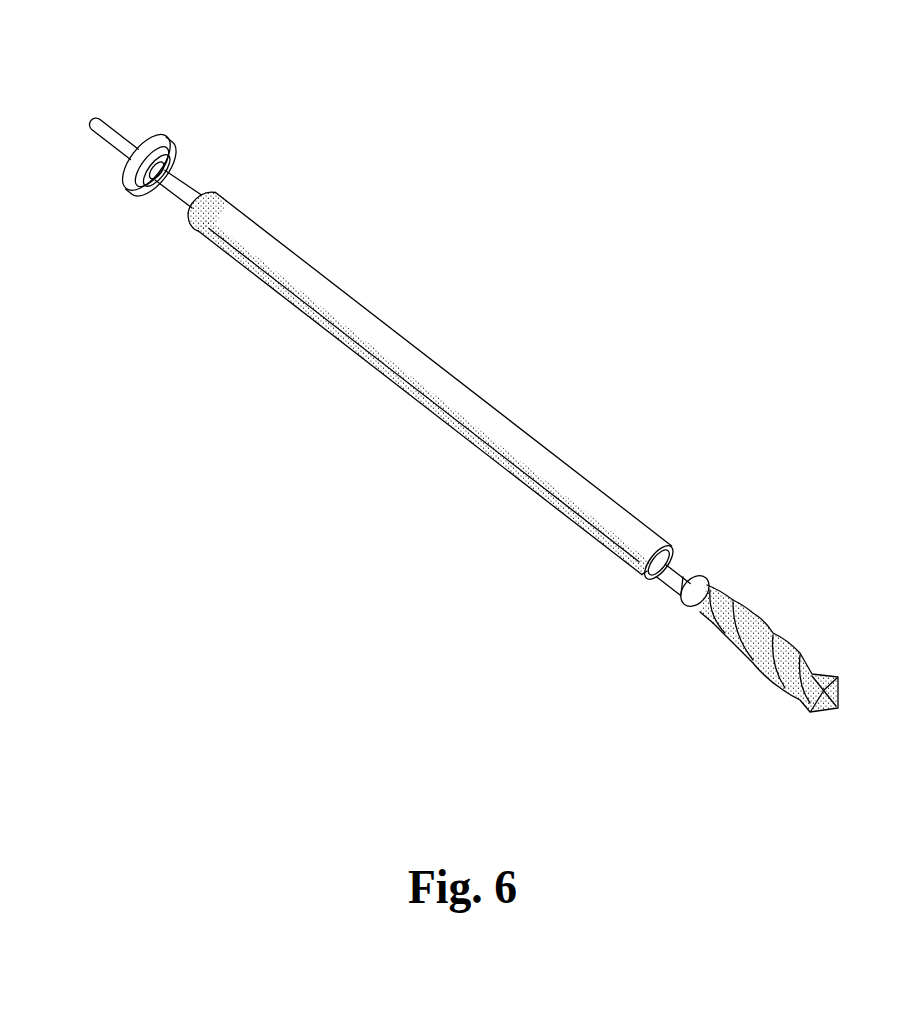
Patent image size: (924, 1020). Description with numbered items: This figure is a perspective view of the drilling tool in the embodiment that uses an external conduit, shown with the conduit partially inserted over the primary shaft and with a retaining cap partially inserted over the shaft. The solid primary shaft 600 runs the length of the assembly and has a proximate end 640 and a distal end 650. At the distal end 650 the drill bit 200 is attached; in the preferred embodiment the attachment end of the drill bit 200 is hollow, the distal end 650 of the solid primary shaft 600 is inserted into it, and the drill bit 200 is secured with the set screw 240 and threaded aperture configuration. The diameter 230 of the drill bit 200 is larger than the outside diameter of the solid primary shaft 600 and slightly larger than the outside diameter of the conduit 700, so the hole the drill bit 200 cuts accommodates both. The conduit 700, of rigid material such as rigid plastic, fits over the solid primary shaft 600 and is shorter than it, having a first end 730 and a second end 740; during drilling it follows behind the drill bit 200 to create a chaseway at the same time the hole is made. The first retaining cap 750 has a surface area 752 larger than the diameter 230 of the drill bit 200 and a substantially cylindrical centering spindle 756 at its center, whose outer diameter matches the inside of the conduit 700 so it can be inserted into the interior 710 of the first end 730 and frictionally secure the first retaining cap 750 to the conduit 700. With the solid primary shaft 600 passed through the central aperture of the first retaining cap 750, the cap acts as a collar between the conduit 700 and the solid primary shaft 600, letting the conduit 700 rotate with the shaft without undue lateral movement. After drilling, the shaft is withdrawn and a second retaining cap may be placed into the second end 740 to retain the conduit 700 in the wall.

The drill bit 200 is at (787, 637).
The diameter of the drill bit 230 is at (692, 608).
The set screw 240 is at (708, 577).
The solid primary shaft 600 is at (173, 183).
The proximate end 640 is at (115, 120).
The distal end 650 is at (681, 590).
The conduit 700 is at (355, 355).
The interior 710 is at (672, 552).
The first end 730 is at (200, 230).
The second end 740 is at (627, 560).
The first retaining cap 750 is at (122, 168).
The surface area 752 is at (170, 133).
The centering spindle 756 is at (166, 159).